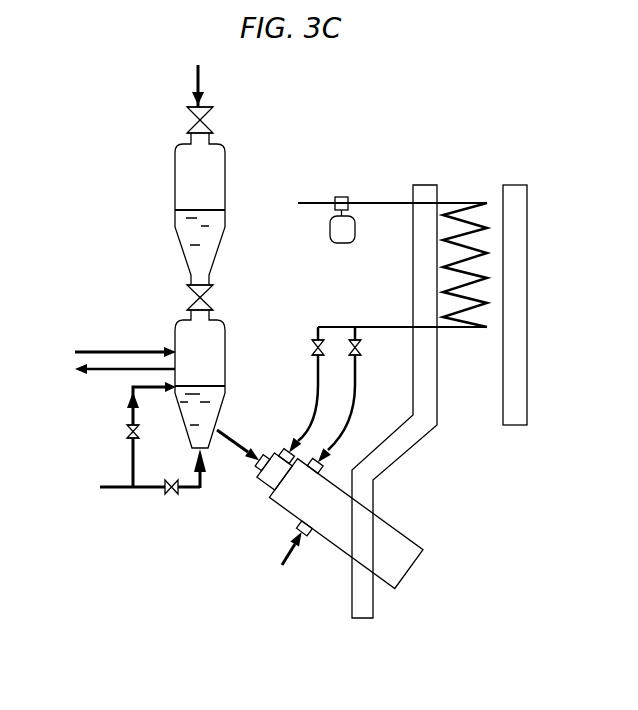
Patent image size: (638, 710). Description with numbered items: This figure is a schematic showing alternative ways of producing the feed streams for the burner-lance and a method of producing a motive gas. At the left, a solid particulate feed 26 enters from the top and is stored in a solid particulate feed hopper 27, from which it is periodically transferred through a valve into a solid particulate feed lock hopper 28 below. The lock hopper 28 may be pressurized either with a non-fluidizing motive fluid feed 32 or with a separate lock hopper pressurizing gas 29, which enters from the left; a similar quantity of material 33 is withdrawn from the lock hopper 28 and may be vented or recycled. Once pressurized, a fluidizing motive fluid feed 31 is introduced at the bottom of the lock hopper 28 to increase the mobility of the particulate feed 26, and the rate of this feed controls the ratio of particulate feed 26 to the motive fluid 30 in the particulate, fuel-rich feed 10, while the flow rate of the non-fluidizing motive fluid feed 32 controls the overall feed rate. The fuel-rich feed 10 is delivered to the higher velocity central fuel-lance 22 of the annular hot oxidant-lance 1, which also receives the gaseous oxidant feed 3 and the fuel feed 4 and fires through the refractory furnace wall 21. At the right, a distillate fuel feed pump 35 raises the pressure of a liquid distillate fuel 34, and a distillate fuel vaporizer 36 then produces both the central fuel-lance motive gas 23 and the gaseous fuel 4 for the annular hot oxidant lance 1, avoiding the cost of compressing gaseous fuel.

The annular hot oxidant-lance 1 is at (410, 537).
The gaseous oxidant feed 3 is at (283, 562).
The fuel feed 4 is at (342, 435).
The particulate, fuel-rich feed 10 is at (223, 421).
The furnace wall 21 is at (425, 437).
The higher velocity central fuel-lance 22 is at (270, 485).
The central fuel-lance motive gas 23 is at (318, 378).
The solid particulate feed 26 is at (200, 75).
The solid particulate feed hopper 27 is at (175, 228).
The solid particulate feed lock hopper 28 is at (227, 344).
The lock hopper pressurizing gas 29 is at (123, 350).
The motive fluid 30 is at (113, 488).
The fluidizing motive fluid feed 31 is at (203, 488).
The non-fluidizing motive fluid feed 32 is at (133, 460).
The withdrawn material 33 is at (113, 372).
The liquid distillate fuel 34 is at (316, 203).
The distillate fuel feed pump 35 is at (341, 197).
The distillate fuel vaporizer 36 is at (465, 328).